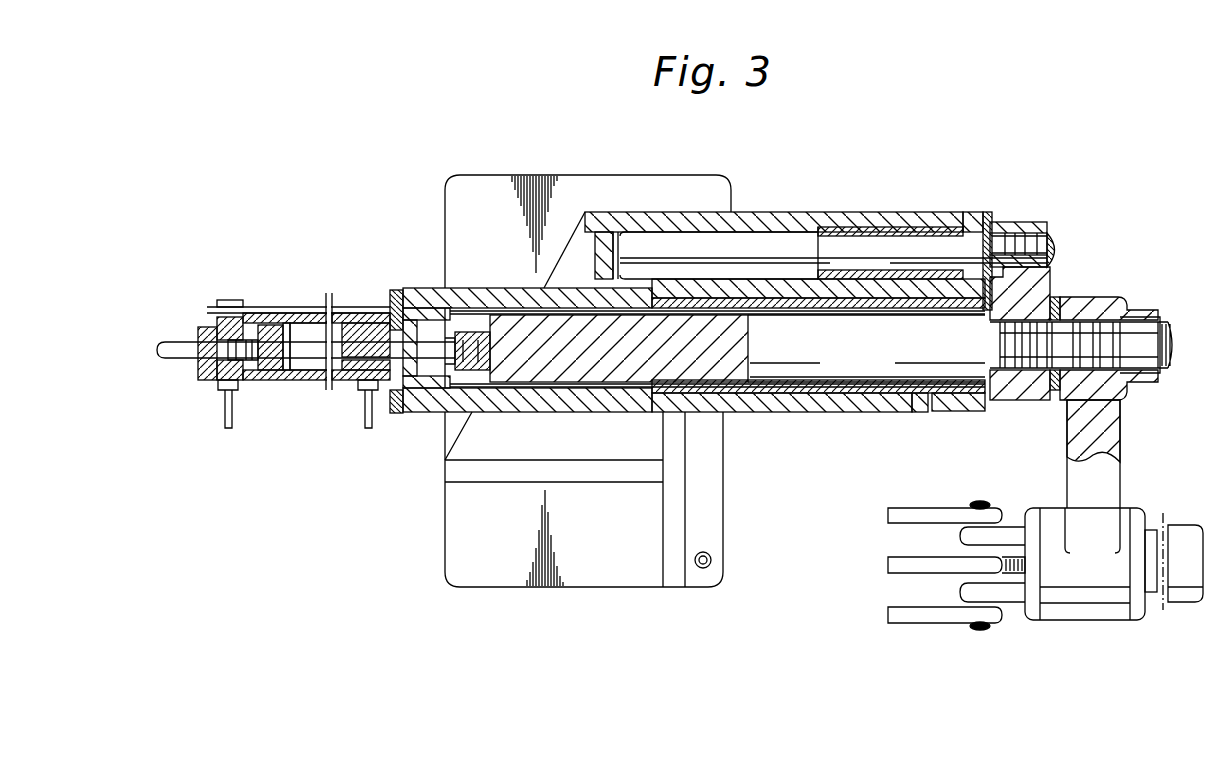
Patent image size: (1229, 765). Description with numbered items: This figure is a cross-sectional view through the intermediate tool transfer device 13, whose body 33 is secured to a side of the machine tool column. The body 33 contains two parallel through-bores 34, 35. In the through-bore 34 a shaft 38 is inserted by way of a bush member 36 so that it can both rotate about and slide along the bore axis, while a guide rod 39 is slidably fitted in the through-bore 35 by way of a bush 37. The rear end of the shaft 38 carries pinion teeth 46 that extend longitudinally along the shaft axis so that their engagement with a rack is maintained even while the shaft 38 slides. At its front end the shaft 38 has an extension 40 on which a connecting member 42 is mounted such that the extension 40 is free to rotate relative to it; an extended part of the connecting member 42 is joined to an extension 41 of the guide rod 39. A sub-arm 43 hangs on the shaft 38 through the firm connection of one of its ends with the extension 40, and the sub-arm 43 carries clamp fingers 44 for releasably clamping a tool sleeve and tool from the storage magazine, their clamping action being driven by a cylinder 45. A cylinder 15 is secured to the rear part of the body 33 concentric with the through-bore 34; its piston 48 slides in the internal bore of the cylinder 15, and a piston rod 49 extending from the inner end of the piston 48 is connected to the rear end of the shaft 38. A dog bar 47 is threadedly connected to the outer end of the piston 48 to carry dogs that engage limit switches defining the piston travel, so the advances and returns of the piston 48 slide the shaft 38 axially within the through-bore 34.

The intermediate tool transfer device 13 is at (740, 420).
The cylinder 15 is at (298, 372).
The body 33 is at (497, 187).
The through-bore 34 is at (936, 400).
The through-bore 35 is at (718, 210).
The bush member 36 is at (896, 400).
The bush 37 is at (843, 228).
The shaft 38 is at (826, 380).
The guide rod 39 is at (763, 250).
The extension 40 is at (1047, 400).
The extension 41 is at (1017, 228).
The connecting member 42 is at (1042, 284).
The sub-arm 43 is at (1117, 432).
The clamp fingers 44 is at (933, 620).
The cylinder 45 is at (1165, 608).
The pinion teeth 46 is at (490, 392).
The dog bar 47 is at (182, 340).
The piston 48 is at (268, 325).
The piston rod 49 is at (366, 318).